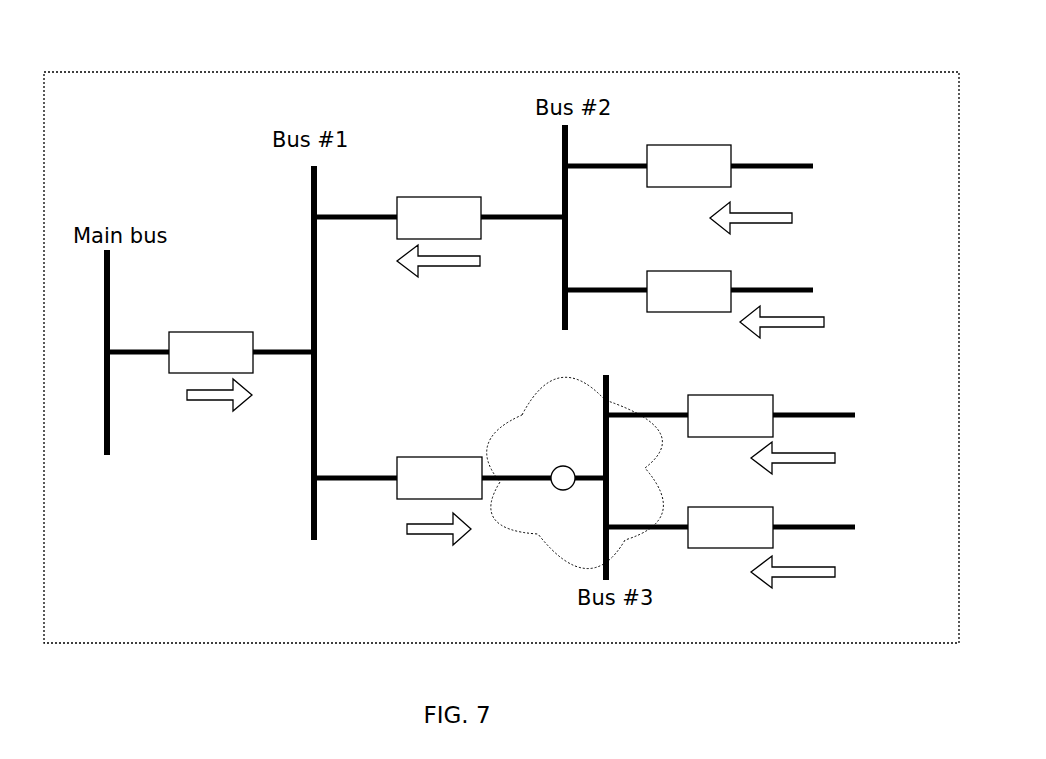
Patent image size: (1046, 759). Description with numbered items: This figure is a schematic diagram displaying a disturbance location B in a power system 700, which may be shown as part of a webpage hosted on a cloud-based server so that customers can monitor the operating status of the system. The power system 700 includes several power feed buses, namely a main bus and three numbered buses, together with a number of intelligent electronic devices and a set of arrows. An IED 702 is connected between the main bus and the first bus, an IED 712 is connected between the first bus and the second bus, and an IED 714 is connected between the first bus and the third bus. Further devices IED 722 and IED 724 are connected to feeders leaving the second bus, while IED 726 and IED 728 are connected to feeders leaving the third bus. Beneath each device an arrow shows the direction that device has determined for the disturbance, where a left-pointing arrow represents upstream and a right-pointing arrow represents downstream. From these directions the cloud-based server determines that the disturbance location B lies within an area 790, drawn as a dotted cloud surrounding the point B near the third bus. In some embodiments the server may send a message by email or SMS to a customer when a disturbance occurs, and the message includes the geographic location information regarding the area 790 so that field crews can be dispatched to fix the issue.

The power system 700 is at (498, 36).
The IED 702 is at (210, 358).
The IED 712 is at (439, 223).
The IED 714 is at (460, 487).
The IED on Bus #2 feeder 722 is at (689, 176).
The IED on Bus #2 feeder 724 is at (694, 290).
The IED on Bus #3 feeder 726 is at (730, 421).
The IED on Bus #3 feeder 728 is at (730, 535).
The area 790 is at (523, 539).